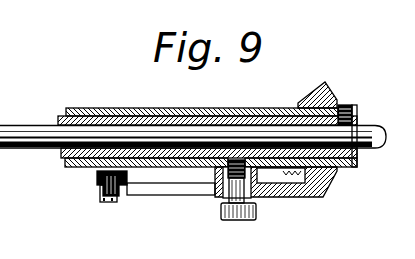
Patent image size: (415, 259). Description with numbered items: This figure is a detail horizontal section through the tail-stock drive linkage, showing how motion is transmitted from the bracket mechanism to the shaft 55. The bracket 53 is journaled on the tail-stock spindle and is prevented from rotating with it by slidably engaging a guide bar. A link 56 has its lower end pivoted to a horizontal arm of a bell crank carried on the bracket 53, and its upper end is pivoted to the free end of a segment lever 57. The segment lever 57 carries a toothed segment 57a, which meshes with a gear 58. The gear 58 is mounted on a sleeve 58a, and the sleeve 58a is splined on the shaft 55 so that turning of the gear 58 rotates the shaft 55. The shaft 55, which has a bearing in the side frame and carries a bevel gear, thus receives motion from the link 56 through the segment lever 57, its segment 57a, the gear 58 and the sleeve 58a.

The bracket 53 is at (228, 109).
The shaft 55 is at (11, 127).
The link 56 is at (97, 178).
The segment lever 57 is at (184, 191).
The segment 57a is at (295, 198).
The gear 58 is at (313, 90).
The sleeve 58a is at (60, 154).